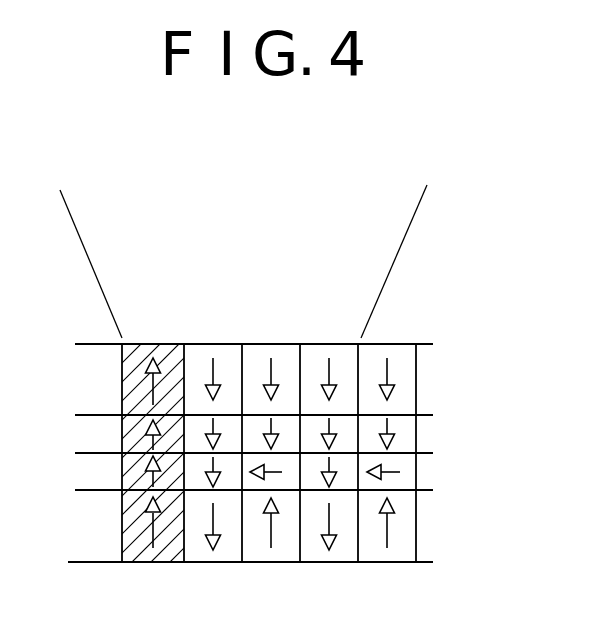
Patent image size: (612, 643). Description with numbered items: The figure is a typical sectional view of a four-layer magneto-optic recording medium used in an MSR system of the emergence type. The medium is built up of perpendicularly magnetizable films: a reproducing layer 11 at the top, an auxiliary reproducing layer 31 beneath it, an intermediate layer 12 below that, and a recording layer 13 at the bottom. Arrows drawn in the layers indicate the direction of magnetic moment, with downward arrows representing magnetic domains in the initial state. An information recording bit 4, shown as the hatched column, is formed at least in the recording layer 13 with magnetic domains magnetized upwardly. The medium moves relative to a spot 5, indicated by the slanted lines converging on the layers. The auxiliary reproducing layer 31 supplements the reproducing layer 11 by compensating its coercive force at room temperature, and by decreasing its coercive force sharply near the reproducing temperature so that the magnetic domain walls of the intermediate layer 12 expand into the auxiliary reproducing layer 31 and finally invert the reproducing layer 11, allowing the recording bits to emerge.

The information recording bit 4 is at (161, 343).
The spot 5 is at (332, 295).
The reproducing layer 11 is at (425, 380).
The auxiliary reproducing layer 31 is at (425, 434).
The intermediate layer 12 is at (425, 472).
The recording layer 13 is at (415, 548).